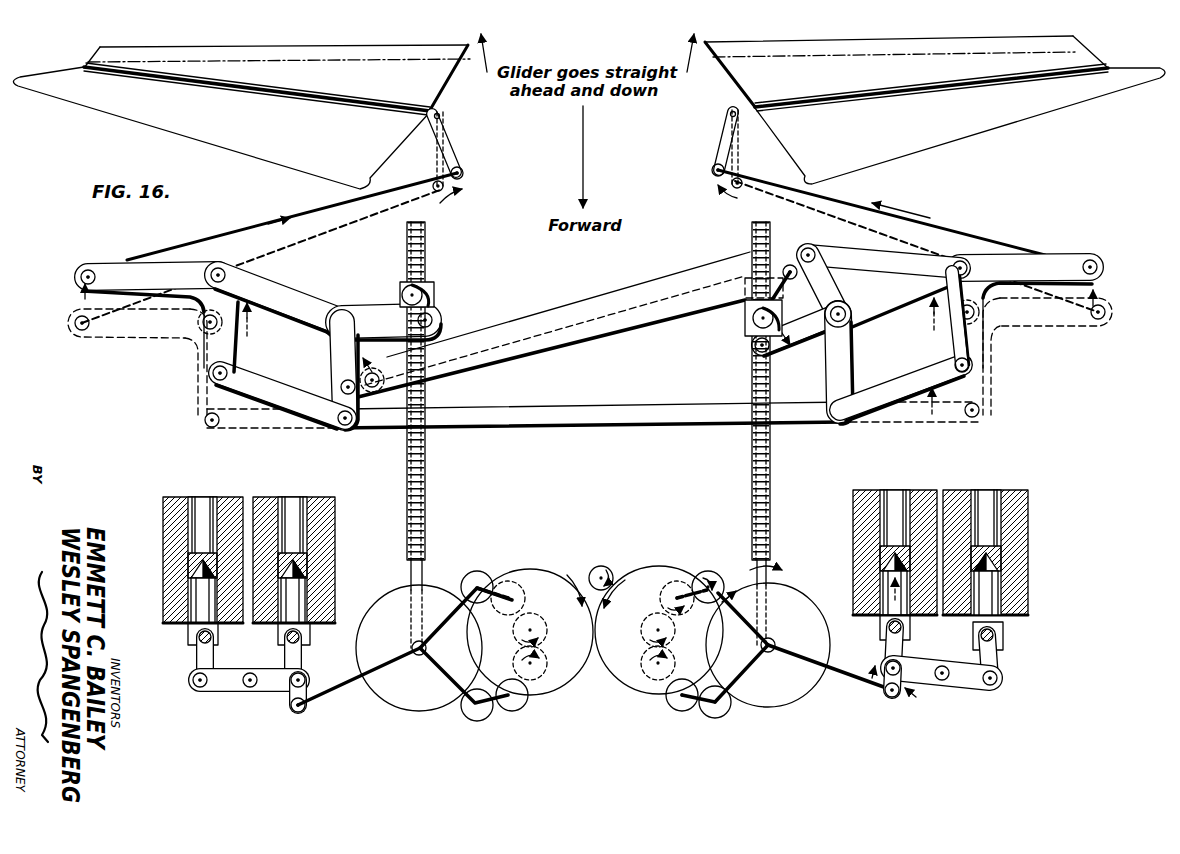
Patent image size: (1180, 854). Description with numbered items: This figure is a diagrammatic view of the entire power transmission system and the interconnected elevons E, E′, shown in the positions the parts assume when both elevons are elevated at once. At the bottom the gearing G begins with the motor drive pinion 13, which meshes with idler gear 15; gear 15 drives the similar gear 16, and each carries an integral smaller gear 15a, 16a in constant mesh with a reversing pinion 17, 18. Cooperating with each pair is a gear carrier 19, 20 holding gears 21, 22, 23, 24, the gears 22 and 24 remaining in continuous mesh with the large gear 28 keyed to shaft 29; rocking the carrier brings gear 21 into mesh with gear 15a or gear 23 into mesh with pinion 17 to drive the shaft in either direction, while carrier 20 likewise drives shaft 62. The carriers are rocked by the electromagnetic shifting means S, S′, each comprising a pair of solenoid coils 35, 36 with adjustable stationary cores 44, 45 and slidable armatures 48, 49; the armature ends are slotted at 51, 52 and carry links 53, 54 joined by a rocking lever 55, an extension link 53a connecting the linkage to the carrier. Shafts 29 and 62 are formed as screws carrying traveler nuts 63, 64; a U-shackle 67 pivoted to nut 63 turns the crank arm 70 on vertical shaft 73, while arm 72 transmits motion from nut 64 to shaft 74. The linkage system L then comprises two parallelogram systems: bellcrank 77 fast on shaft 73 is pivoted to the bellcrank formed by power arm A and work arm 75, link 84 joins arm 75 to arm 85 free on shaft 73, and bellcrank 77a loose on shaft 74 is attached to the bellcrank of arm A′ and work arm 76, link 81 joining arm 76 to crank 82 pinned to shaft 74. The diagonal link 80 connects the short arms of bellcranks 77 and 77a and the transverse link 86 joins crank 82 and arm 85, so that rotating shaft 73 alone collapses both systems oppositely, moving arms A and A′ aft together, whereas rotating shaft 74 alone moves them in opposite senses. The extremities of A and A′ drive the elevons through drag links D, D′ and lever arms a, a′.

The drive pinion 13 is at (598, 572).
The idler gear 15 is at (628, 583).
The smaller gear 15a is at (647, 614).
The gear 16 is at (518, 576).
The smaller gear 16a is at (530, 614).
The reversing pinion 17 is at (650, 678).
The reversing pinion 18 is at (545, 656).
The gear carrier 19 is at (840, 666).
The gear carrier 20 is at (353, 690).
The gear 21 is at (673, 586).
The gear 22 is at (706, 570).
The gear 23 is at (675, 708).
The gear 24 is at (722, 710).
The large gear 28 is at (768, 698).
The shaft 29 is at (752, 231).
The solenoid coil 35 is at (860, 533).
The solenoid coil 36 is at (1018, 519).
The stationary core portion 44 is at (886, 510).
The stationary core portion 45 is at (994, 503).
The armature portion 48 is at (883, 573).
The armature portion 49 is at (997, 578).
The slot 51 is at (882, 622).
The slot 52 is at (1005, 629).
The link 53 is at (889, 645).
The extension link 53a is at (892, 700).
The link 54 is at (997, 658).
The rocking lever 55 is at (960, 680).
The shaft 62 is at (427, 240).
The traveler nut 63 is at (738, 322).
The traveler nut 64 is at (433, 283).
The U-shackle 67 is at (751, 330).
The upper crank arm 70 is at (752, 348).
The arm 72 is at (378, 308).
The shaft 73 is at (855, 330).
The shaft 74 is at (340, 324).
The arm 75 is at (957, 348).
The work arm 76 is at (232, 362).
The bellcrank lever 77 is at (877, 279).
The bellcrank lever 77a is at (309, 298).
The link 80 is at (620, 312).
The link 81 is at (285, 400).
The crank 82 is at (336, 367).
The link 84 is at (910, 381).
The arm 85 is at (832, 364).
The link 86 is at (593, 420).
The power arm A is at (1033, 325).
The power arm A' is at (141, 337).
The drag link D is at (908, 241).
The drag link D' is at (269, 248).
The elevon E is at (935, 98).
The elevon E' is at (241, 104).
The gearing G is at (493, 570).
The linkage system L is at (550, 312).
The electromagnetic gear shifting means S is at (940, 533).
The electromagnetic gear shifting means S' is at (250, 588).
The lever arm a is at (724, 149).
The lever arm a' is at (452, 151).